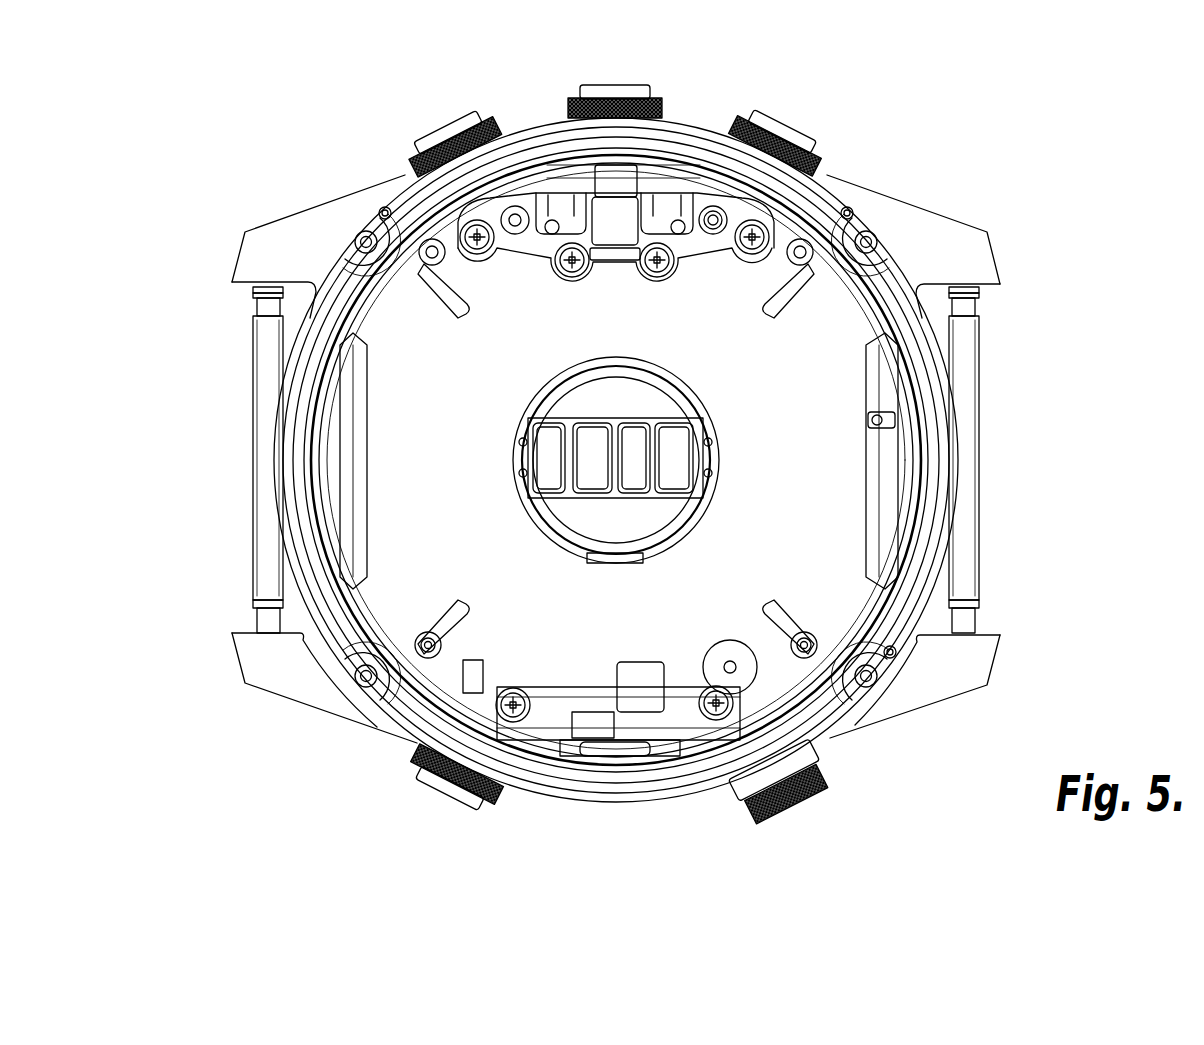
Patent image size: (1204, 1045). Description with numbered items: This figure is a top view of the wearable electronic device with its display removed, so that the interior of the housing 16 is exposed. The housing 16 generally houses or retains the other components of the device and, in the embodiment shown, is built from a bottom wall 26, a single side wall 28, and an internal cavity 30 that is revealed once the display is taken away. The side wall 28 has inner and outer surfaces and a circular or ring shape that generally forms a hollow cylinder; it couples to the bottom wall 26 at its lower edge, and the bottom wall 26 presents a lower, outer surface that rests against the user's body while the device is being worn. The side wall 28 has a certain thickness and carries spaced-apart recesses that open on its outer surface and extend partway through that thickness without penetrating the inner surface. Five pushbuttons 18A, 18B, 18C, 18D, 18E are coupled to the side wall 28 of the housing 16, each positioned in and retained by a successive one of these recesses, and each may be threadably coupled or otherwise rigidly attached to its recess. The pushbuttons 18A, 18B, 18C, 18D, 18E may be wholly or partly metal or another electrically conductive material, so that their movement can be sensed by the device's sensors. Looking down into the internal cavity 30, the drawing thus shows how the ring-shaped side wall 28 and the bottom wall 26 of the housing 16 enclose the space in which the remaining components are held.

The housing 16 is at (700, 88).
The pushbutton 18A is at (798, 805).
The pushbutton 18B is at (440, 783).
The pushbutton 18C is at (450, 132).
The pushbutton 18D is at (607, 88).
The pushbutton 18E is at (782, 130).
The bottom wall 26 is at (437, 459).
The side wall 28 is at (305, 388).
The internal cavity 30 is at (812, 352).